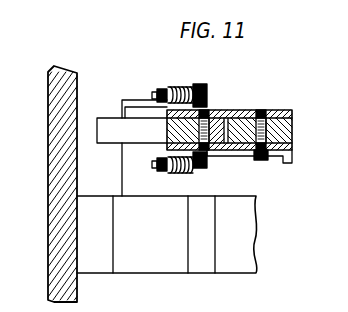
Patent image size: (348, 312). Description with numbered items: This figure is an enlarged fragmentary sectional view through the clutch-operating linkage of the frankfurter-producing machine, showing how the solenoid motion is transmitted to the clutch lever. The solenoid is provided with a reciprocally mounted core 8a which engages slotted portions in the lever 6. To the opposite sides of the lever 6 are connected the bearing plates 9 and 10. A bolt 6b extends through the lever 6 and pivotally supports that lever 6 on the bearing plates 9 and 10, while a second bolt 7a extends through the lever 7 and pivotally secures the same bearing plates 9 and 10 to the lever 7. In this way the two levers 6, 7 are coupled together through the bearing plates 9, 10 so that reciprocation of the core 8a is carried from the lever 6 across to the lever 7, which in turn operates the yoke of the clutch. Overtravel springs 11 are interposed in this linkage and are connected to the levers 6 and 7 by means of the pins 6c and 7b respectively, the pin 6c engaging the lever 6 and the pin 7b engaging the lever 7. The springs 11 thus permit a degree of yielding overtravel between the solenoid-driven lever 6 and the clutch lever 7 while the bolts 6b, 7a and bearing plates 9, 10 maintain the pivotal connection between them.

The lever 6 is at (293, 129).
The bolt 6b is at (259, 109).
The pin 6c is at (189, 88).
The lever 7 is at (246, 109).
The bolt 7a is at (206, 109).
The pin 7b is at (160, 90).
The core 8a is at (179, 263).
The bearing plate 9 is at (286, 110).
The bearing plate 10 is at (286, 152).
The overtravel spring 11 is at (186, 85).